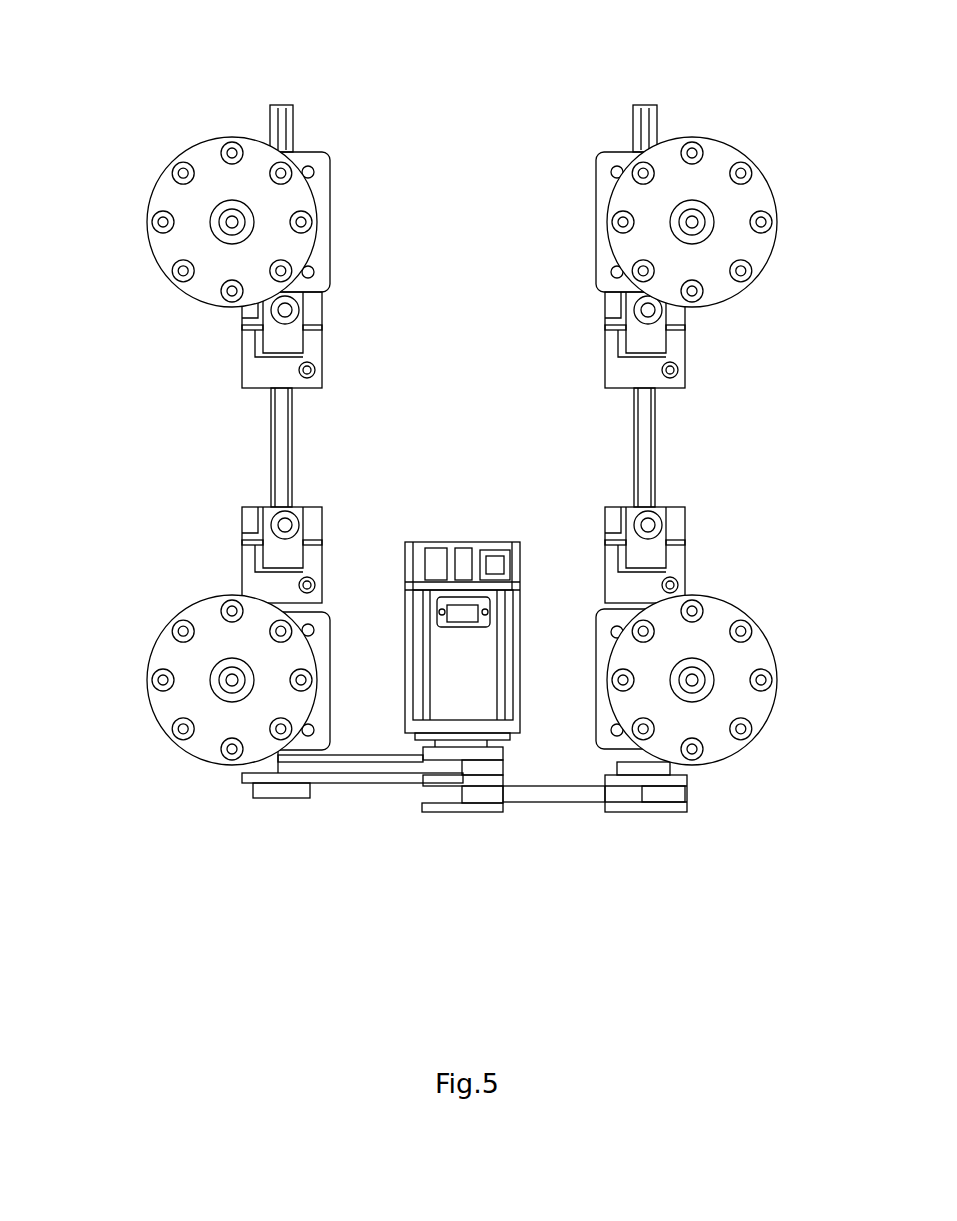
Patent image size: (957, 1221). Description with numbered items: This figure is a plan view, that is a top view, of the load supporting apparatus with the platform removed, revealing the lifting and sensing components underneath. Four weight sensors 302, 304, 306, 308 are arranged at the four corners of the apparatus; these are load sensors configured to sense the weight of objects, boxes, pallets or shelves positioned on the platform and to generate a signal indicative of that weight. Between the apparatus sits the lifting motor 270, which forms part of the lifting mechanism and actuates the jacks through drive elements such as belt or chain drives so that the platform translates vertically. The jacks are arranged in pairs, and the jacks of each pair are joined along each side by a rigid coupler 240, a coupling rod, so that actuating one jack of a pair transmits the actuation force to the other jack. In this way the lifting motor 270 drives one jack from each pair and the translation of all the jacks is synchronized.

The weight sensor 302 is at (212, 713).
The weight sensor 304 is at (212, 180).
The weight sensor 306 is at (702, 183).
The weight sensor 308 is at (713, 715).
The rigid coupler 240 is at (263, 460).
The lifting motor 270 is at (465, 545).